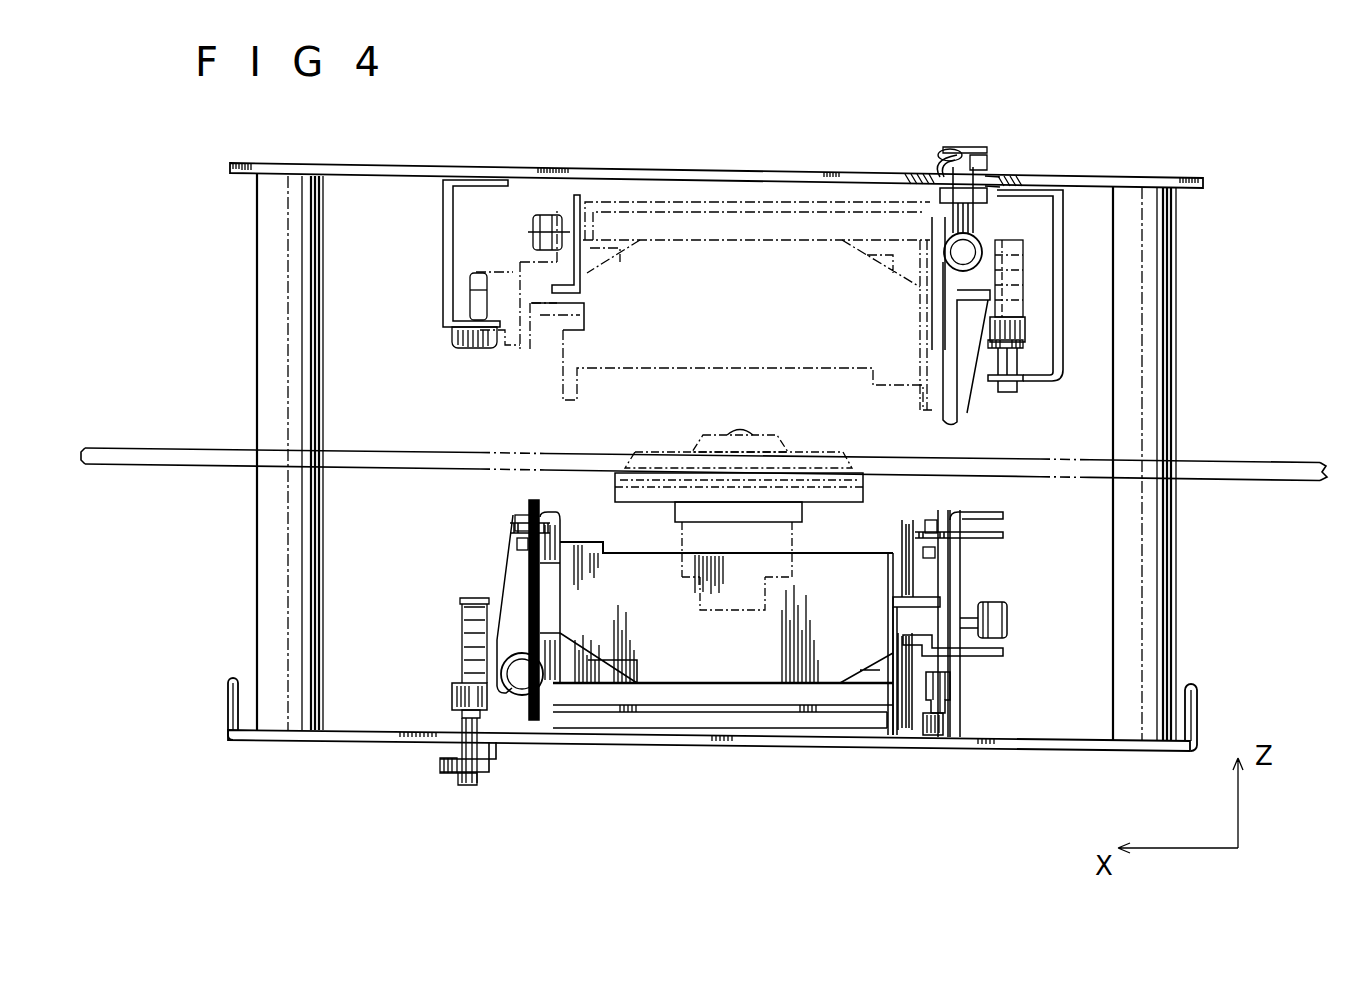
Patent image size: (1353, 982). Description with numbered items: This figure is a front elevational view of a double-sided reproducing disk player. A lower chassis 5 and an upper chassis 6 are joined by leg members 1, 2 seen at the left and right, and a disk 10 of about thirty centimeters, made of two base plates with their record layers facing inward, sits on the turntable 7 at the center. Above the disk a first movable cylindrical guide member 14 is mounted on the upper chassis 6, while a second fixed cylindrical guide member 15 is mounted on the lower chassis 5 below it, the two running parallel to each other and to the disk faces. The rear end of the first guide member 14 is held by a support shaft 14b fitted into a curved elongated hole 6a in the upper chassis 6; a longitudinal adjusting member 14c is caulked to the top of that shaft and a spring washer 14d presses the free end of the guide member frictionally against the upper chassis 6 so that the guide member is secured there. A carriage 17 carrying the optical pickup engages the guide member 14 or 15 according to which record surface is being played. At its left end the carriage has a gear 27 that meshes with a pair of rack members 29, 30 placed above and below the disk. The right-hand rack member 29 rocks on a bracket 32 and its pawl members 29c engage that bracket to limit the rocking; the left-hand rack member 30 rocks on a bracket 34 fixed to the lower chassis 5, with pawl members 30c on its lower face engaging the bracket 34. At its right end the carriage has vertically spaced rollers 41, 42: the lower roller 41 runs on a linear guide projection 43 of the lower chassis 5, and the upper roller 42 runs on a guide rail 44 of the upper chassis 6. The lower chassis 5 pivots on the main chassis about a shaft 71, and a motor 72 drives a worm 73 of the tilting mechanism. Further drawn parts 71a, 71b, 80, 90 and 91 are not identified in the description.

The leg member 1 is at (275, 250).
The leg member 2 is at (1157, 275).
The lower chassis 5 is at (635, 740).
The upper chassis 6 is at (520, 170).
The elongated hole 6a is at (997, 177).
The turntable 7 is at (820, 441).
The disk 10 is at (1262, 462).
The first movable cylindrical guide member 14 is at (980, 252).
The support shaft 14b is at (987, 145).
The longitudinal adjusting member 14c is at (953, 150).
The spring washer 14d is at (940, 160).
The second fixed cylindrical guide member 15 is at (522, 695).
The carriage 17 is at (463, 569).
The gear 27 is at (473, 623).
The rack member 29 is at (1010, 330).
The pawl members 29c is at (1012, 368).
The rack member 30 is at (450, 688).
The pawl members 30c is at (475, 722).
The bracket 32 is at (1064, 235).
The bracket 34 is at (443, 765).
The roller 41 is at (945, 693).
The roller 42 is at (997, 620).
The linear guide projection 43 is at (945, 720).
The guide rail 44 is at (440, 207).
The shaft 71 is at (705, 660).
The bolt 71a is at (515, 530).
The fork 71b is at (975, 538).
The motor 72 is at (775, 718).
The worm 73 is at (512, 515).
The leg 80 is at (910, 735).
The bracket 90 is at (955, 578).
The bar 91 is at (1005, 645).